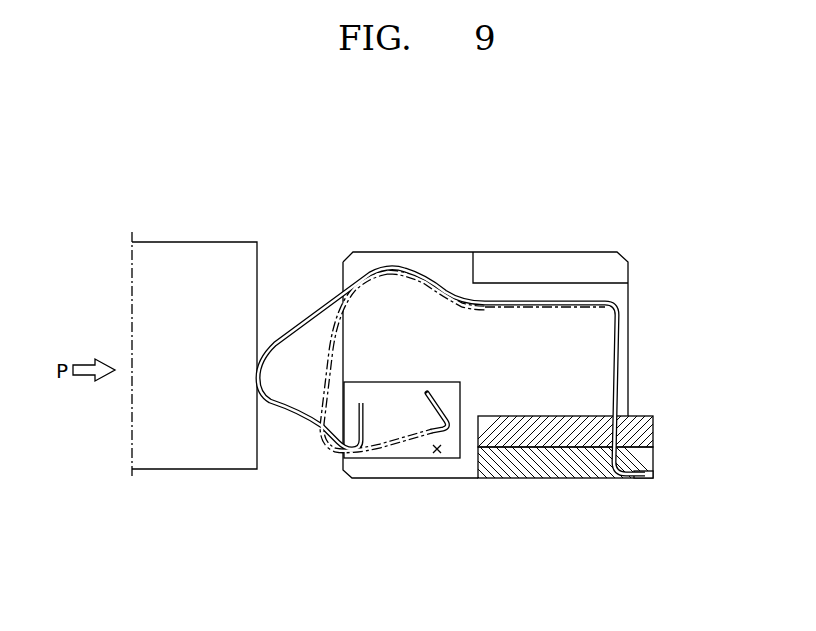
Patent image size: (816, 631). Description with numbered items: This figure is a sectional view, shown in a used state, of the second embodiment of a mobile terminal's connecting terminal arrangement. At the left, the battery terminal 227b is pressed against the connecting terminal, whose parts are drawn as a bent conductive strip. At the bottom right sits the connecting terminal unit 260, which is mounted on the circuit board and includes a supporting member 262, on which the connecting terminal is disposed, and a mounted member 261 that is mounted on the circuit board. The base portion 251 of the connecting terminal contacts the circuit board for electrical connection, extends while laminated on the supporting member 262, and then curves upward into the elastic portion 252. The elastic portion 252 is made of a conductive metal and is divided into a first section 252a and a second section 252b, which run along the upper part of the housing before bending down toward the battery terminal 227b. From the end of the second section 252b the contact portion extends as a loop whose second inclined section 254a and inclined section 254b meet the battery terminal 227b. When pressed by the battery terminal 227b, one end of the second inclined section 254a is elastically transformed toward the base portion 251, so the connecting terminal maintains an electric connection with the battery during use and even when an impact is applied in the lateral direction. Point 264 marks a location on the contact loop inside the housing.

The battery terminal 227b is at (258, 292).
The elastic portion 252 is at (485, 321).
The first section 252a is at (550, 309).
The second section 252b is at (428, 290).
The second inclined section 254a is at (305, 317).
The second inclined section 254b is at (302, 420).
The connecting terminal unit 260 is at (550, 493).
The mounted member 261 is at (551, 489).
The supporting member 262 is at (495, 444).
The contact point 264 is at (437, 454).
The base portion 251 is at (655, 476).